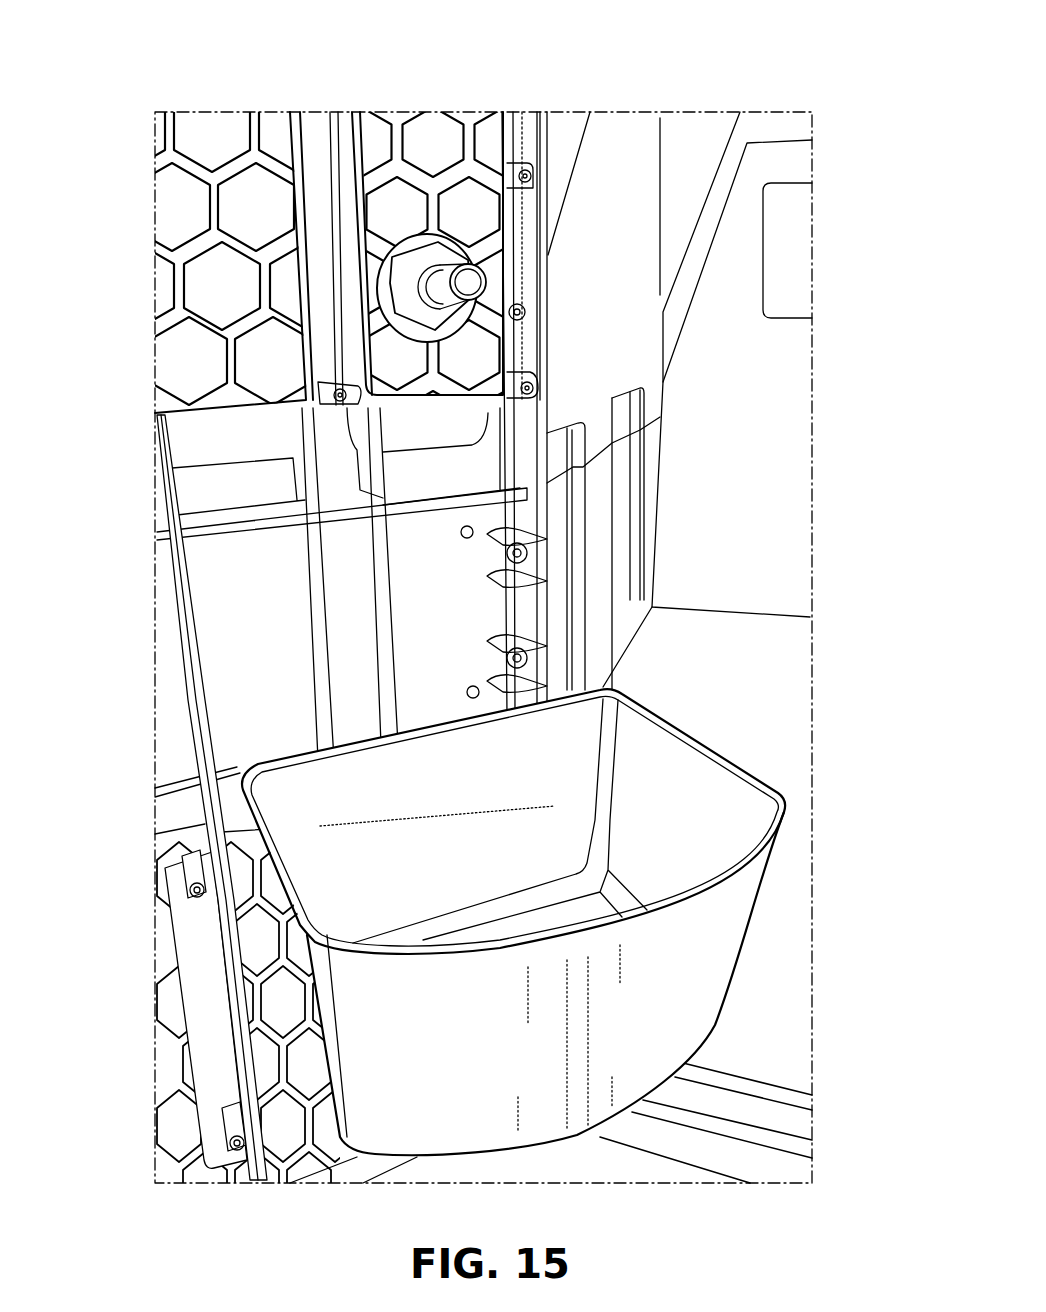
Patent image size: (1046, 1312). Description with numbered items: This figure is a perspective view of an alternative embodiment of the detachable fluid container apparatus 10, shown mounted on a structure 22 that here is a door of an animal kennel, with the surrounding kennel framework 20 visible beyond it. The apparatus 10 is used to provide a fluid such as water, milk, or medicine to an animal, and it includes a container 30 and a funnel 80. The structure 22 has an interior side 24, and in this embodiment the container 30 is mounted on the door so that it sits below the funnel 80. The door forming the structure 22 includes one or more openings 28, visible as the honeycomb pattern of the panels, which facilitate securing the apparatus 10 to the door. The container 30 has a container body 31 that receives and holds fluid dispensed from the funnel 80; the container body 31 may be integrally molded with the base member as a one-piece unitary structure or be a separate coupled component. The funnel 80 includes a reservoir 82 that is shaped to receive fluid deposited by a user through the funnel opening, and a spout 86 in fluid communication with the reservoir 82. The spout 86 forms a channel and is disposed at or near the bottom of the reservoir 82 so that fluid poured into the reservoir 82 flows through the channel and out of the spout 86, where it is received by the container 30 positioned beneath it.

The detachable fluid container apparatus 10 is at (501, 616).
The cabinet 20 is at (868, 375).
The structure 22 is at (285, 654).
The interior side 24 is at (160, 612).
The openings 28 is at (190, 355).
The container 30 is at (596, 868).
The container body 31 is at (690, 967).
The funnel 80 is at (503, 234).
The reservoir 82 is at (388, 205).
The spout 86 is at (487, 280).